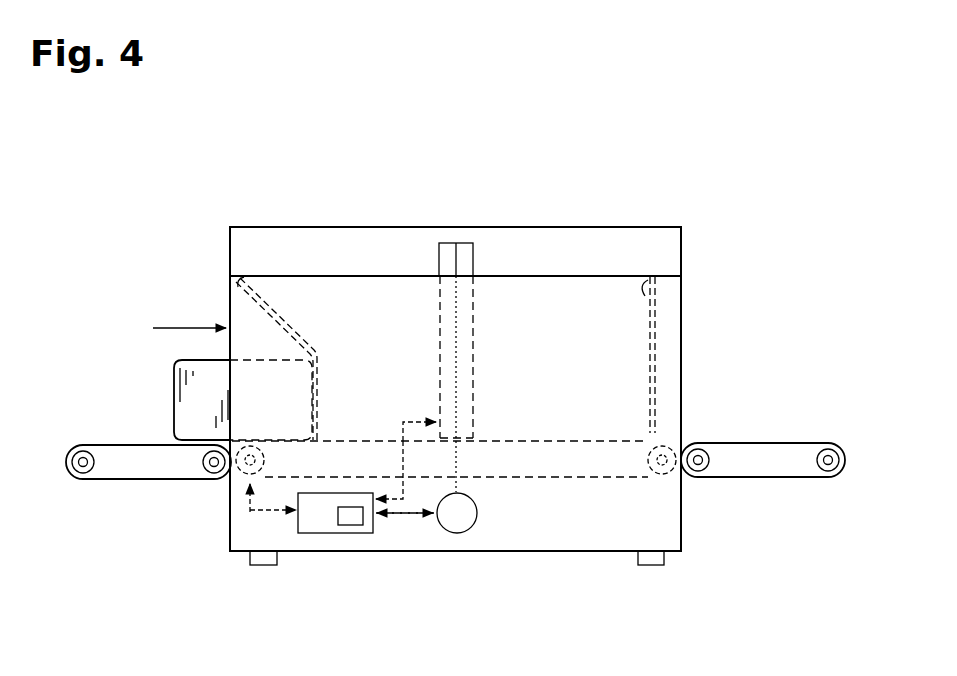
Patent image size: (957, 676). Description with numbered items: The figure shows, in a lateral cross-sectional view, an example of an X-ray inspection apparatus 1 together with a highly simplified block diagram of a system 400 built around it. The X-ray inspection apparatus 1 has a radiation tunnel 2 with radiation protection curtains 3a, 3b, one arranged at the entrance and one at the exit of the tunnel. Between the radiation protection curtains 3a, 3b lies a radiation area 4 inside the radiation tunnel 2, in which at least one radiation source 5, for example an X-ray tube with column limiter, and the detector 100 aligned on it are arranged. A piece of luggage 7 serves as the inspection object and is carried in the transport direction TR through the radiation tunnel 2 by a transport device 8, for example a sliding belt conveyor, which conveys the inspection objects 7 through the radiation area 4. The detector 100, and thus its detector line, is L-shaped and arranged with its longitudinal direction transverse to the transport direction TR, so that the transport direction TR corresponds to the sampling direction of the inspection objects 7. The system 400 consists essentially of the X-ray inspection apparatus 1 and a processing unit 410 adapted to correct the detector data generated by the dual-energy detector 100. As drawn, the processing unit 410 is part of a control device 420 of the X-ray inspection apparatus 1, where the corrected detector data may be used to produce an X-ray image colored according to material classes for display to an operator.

The system 400 is at (724, 175).
The X-ray inspection apparatus 1 is at (262, 528).
The radiation tunnel 2 is at (670, 350).
The radiation protection curtain 3a is at (284, 318).
The radiation protection curtain 3b is at (641, 278).
The radiation area 4 is at (540, 217).
The radiation source 5 is at (457, 520).
The piece of luggage 7 is at (193, 390).
The transport device 8 is at (100, 442).
The detector 100 is at (467, 363).
The processing unit 410 is at (352, 522).
The control device 420 is at (312, 525).
The transport direction TR is at (189, 311).